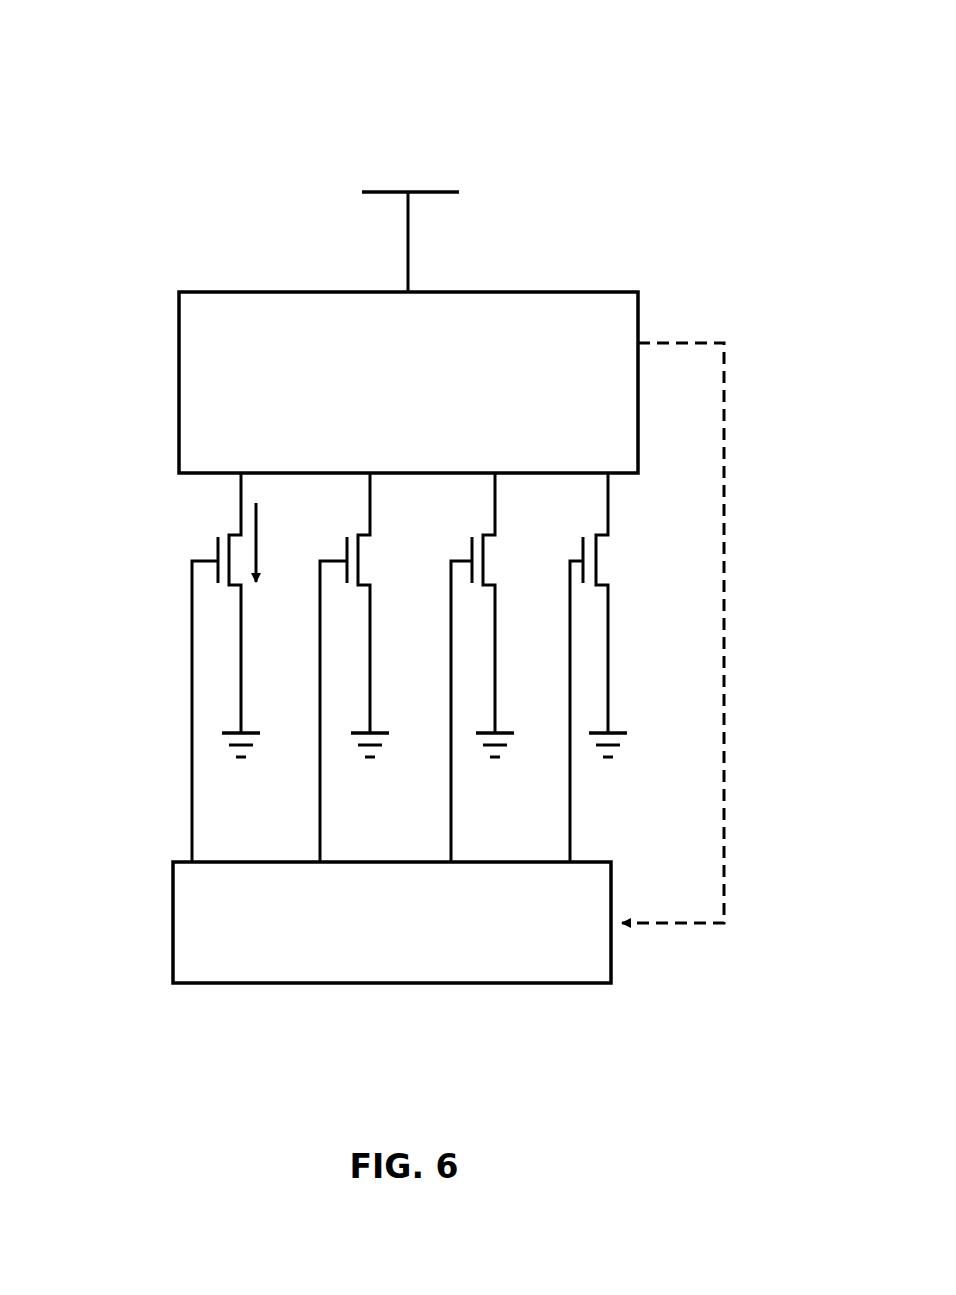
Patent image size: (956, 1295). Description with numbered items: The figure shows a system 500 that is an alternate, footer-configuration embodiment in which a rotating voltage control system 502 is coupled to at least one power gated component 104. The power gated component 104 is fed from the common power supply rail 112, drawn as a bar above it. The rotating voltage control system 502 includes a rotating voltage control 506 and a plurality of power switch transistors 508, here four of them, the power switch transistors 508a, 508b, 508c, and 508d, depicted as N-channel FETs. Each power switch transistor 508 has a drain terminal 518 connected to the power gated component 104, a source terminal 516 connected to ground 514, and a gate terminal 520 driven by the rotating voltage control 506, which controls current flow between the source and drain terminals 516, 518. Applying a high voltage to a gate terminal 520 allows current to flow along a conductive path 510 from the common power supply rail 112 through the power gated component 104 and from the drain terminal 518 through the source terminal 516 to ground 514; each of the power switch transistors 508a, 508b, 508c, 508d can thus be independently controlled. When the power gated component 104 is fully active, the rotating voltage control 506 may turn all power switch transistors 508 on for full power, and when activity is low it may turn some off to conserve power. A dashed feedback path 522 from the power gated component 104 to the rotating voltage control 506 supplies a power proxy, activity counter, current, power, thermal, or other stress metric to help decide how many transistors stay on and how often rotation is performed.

The system 500 is at (390, 33).
The common power supply rail 112 is at (378, 183).
The power gated component 104 is at (639, 378).
The rotating voltage control system 502 is at (760, 568).
The rotating voltage control 506 is at (173, 915).
The power switch transistors 508 is at (162, 558).
The power switch transistor 508a is at (217, 573).
The power switch transistor 508b is at (345, 573).
The power switch transistor 508c is at (471, 575).
The power switch transistor 508d is at (602, 667).
The conductive paths 510 is at (256, 550).
The ground 514 is at (609, 705).
The source terminal 516 is at (610, 602).
The drain terminal 518 is at (610, 532).
The gate terminal 520 is at (578, 560).
The feedback path 522 is at (725, 618).